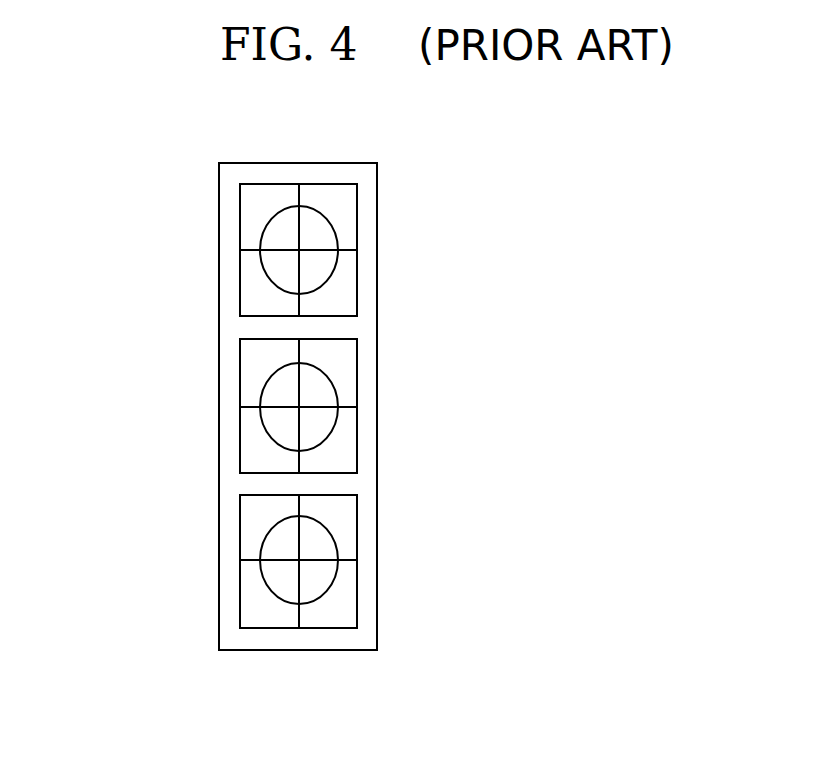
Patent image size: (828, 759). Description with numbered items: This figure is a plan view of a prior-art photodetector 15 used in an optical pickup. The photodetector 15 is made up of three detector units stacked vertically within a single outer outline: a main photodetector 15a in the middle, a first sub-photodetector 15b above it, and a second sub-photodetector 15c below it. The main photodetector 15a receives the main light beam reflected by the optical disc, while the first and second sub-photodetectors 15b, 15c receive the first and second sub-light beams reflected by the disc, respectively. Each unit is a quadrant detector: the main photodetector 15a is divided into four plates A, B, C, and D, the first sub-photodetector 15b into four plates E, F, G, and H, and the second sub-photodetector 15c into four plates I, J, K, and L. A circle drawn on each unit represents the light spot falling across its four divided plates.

The photodetector 15 is at (157, 181).
The main photodetector 15a is at (357, 371).
The first sub-photodetector 15b is at (357, 217).
The second sub-photodetector 15c is at (357, 526).